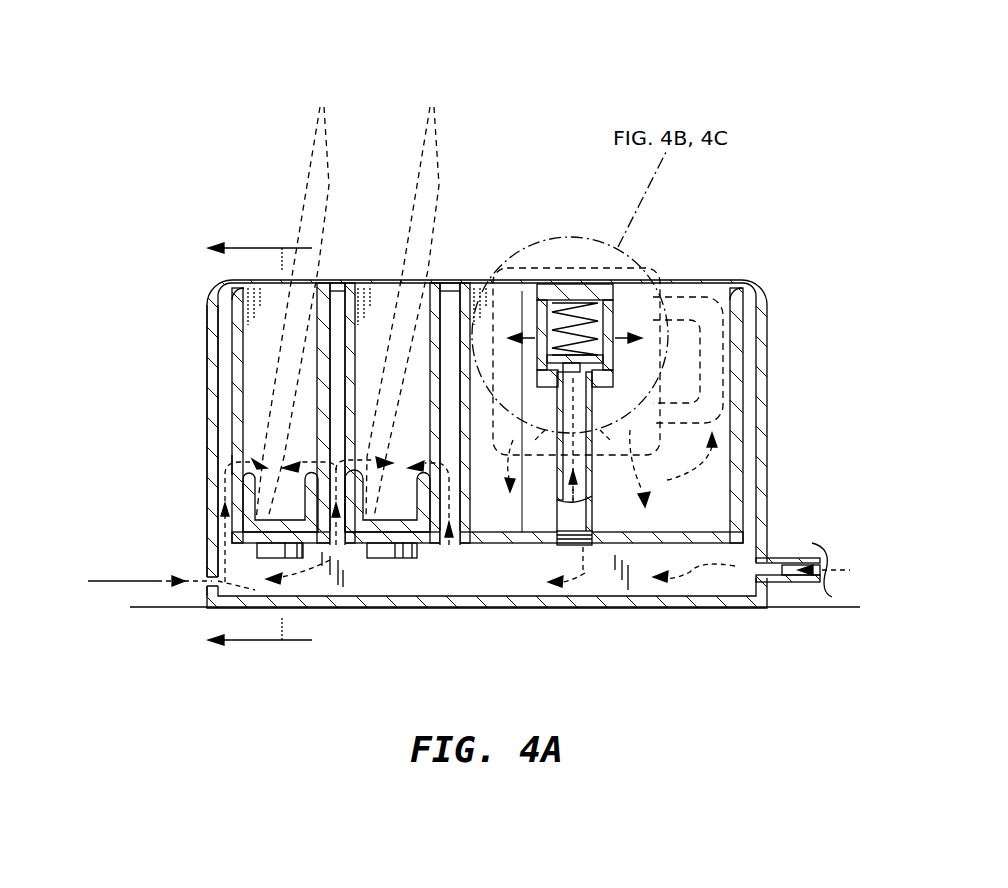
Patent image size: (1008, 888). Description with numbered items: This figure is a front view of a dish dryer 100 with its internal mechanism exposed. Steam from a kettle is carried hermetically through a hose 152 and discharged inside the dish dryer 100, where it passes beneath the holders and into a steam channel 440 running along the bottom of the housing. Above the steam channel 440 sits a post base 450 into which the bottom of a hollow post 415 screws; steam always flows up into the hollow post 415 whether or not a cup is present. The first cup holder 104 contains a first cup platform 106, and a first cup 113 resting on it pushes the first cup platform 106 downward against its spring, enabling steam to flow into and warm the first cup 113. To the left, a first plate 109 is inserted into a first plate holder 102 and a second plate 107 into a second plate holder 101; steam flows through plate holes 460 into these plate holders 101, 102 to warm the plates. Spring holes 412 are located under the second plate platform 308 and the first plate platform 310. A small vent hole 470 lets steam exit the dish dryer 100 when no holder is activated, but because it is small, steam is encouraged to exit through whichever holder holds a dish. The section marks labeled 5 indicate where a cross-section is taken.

The dish dryer 100 is at (754, 246).
The second plate holder 101 is at (252, 390).
The first plate holder 102 is at (390, 283).
The first cup holder 104 is at (678, 297).
The first cup platform 106 is at (567, 280).
The second plate 107 is at (322, 105).
The first plate 109 is at (438, 105).
The first cup 113 is at (537, 268).
The hose 152 is at (795, 558).
The second plate platform 308 is at (243, 499).
The first plate platform 310 is at (420, 530).
The spring holes 412 is at (262, 553).
The hollow post 415 is at (592, 473).
The steam channel 440 is at (231, 320).
The post base 450 is at (565, 538).
The plate holes 460 is at (232, 462).
The vent hole 470 is at (387, 571).
The section line 5- 5 is at (274, 444).